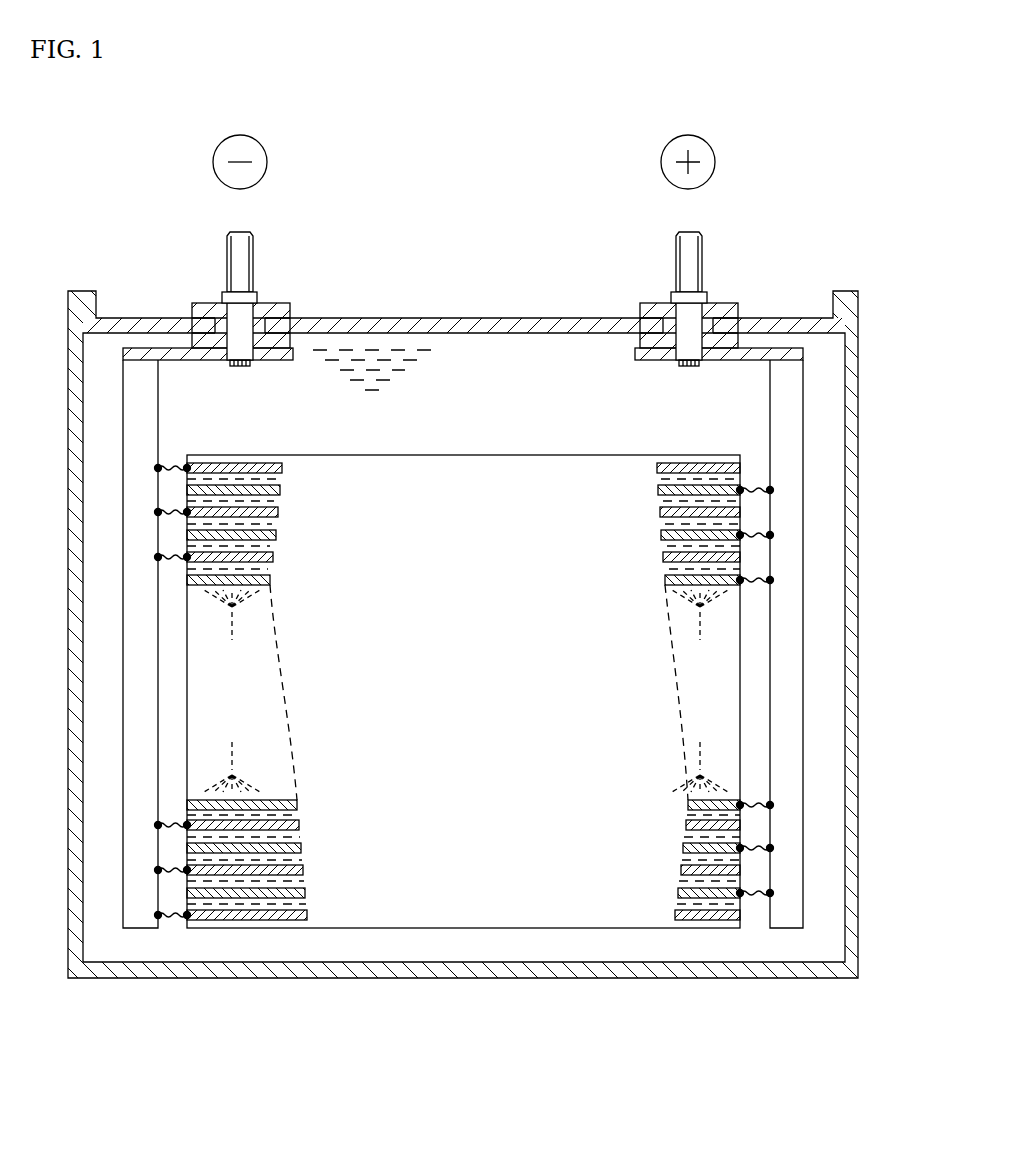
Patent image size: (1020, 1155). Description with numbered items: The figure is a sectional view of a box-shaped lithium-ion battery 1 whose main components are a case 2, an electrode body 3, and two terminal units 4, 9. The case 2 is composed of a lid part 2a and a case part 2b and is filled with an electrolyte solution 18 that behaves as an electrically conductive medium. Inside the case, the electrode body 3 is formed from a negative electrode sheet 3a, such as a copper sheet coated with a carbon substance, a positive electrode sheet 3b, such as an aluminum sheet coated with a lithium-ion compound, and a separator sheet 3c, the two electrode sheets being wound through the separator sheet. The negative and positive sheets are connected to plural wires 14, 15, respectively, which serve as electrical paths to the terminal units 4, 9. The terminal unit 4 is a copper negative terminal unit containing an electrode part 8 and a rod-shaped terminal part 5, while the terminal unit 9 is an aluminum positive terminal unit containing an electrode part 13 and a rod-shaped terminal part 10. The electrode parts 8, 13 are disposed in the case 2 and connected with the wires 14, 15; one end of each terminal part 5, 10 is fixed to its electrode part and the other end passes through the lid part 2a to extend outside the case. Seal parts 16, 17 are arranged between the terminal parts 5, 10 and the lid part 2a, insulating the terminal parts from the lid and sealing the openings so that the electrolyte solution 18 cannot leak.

The battery 1 is at (465, 205).
The case 2 is at (632, 1000).
The lid part 2a is at (462, 318).
The case part 2b is at (460, 980).
The electrode body 3 is at (478, 445).
The negative electrode sheet 3a is at (282, 468).
The positive electrode sheet 3b is at (280, 490).
The separator sheet 3c is at (463, 691).
The terminal unit 4 is at (280, 368).
The terminal part 5 is at (212, 268).
The electrode part 8 is at (139, 935).
The terminal unit 9 is at (648, 370).
The terminal part 10 is at (722, 266).
The electrode part 13 is at (792, 935).
The wires 14 is at (173, 450).
The wires 15 is at (722, 643).
The seal part 16 is at (290, 300).
The seal part 17 is at (640, 305).
The electrolyte solution 18 is at (372, 345).